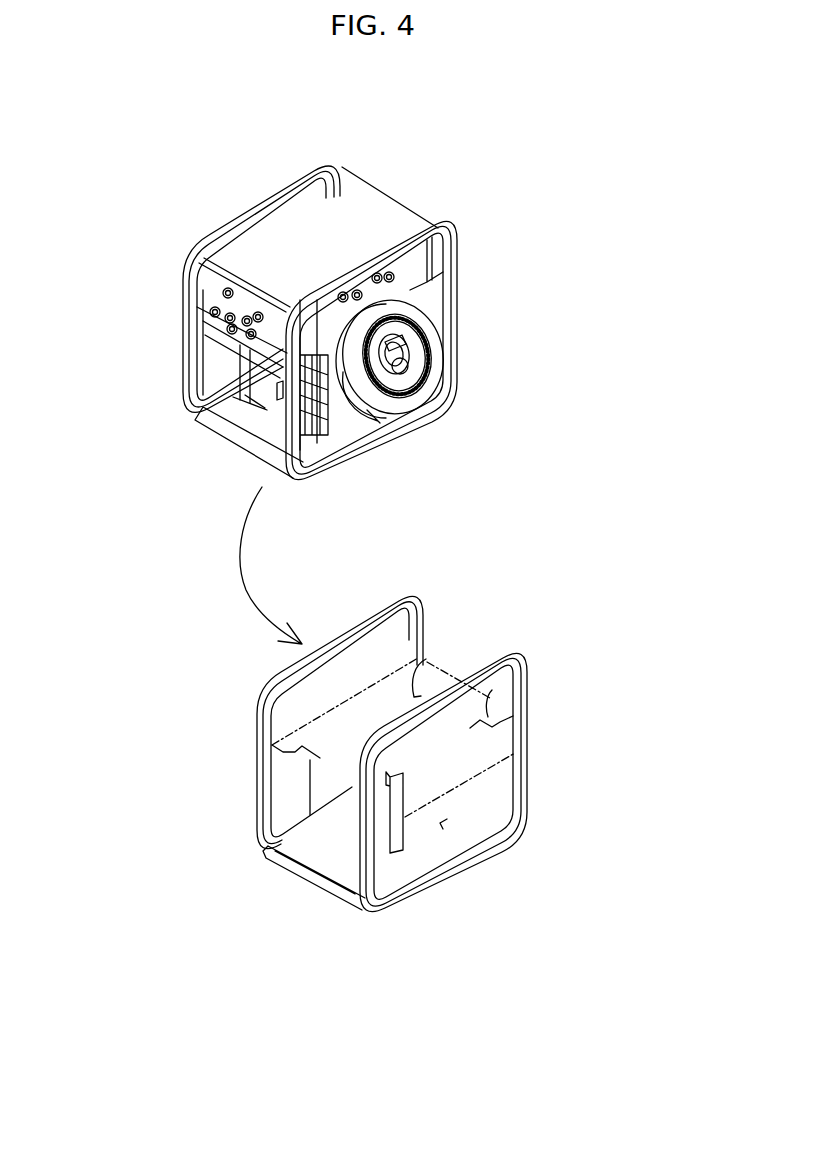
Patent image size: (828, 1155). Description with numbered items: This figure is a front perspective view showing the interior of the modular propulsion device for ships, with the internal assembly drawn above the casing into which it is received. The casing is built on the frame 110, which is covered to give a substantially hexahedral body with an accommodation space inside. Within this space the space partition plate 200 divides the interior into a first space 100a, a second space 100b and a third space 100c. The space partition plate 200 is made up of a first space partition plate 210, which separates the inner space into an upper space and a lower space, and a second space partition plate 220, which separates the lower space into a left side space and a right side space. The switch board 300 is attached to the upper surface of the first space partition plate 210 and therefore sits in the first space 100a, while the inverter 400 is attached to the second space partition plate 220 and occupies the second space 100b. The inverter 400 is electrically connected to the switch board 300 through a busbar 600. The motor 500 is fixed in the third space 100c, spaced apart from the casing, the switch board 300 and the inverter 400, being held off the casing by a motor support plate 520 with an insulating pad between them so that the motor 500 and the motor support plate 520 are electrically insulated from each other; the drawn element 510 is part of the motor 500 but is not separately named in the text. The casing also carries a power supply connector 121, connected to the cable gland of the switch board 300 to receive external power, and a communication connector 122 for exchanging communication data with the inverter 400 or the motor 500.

The frame 110 is at (277, 197).
The power supply connector 121 is at (203, 327).
The communication connector 122 is at (233, 343).
The switch board 300 is at (363, 210).
The inverter 400 is at (258, 408).
The motor 500 is at (368, 410).
The motor flange 510 is at (413, 387).
The motor support plate 520 is at (385, 408).
The busbar 600 is at (384, 340).
The first space 100a is at (425, 662).
The second space 100b is at (340, 812).
The third space 100c is at (440, 823).
The space partition plate 200 is at (626, 616).
The first space partition plate 210 is at (493, 697).
The second space partition plate 220 is at (405, 817).